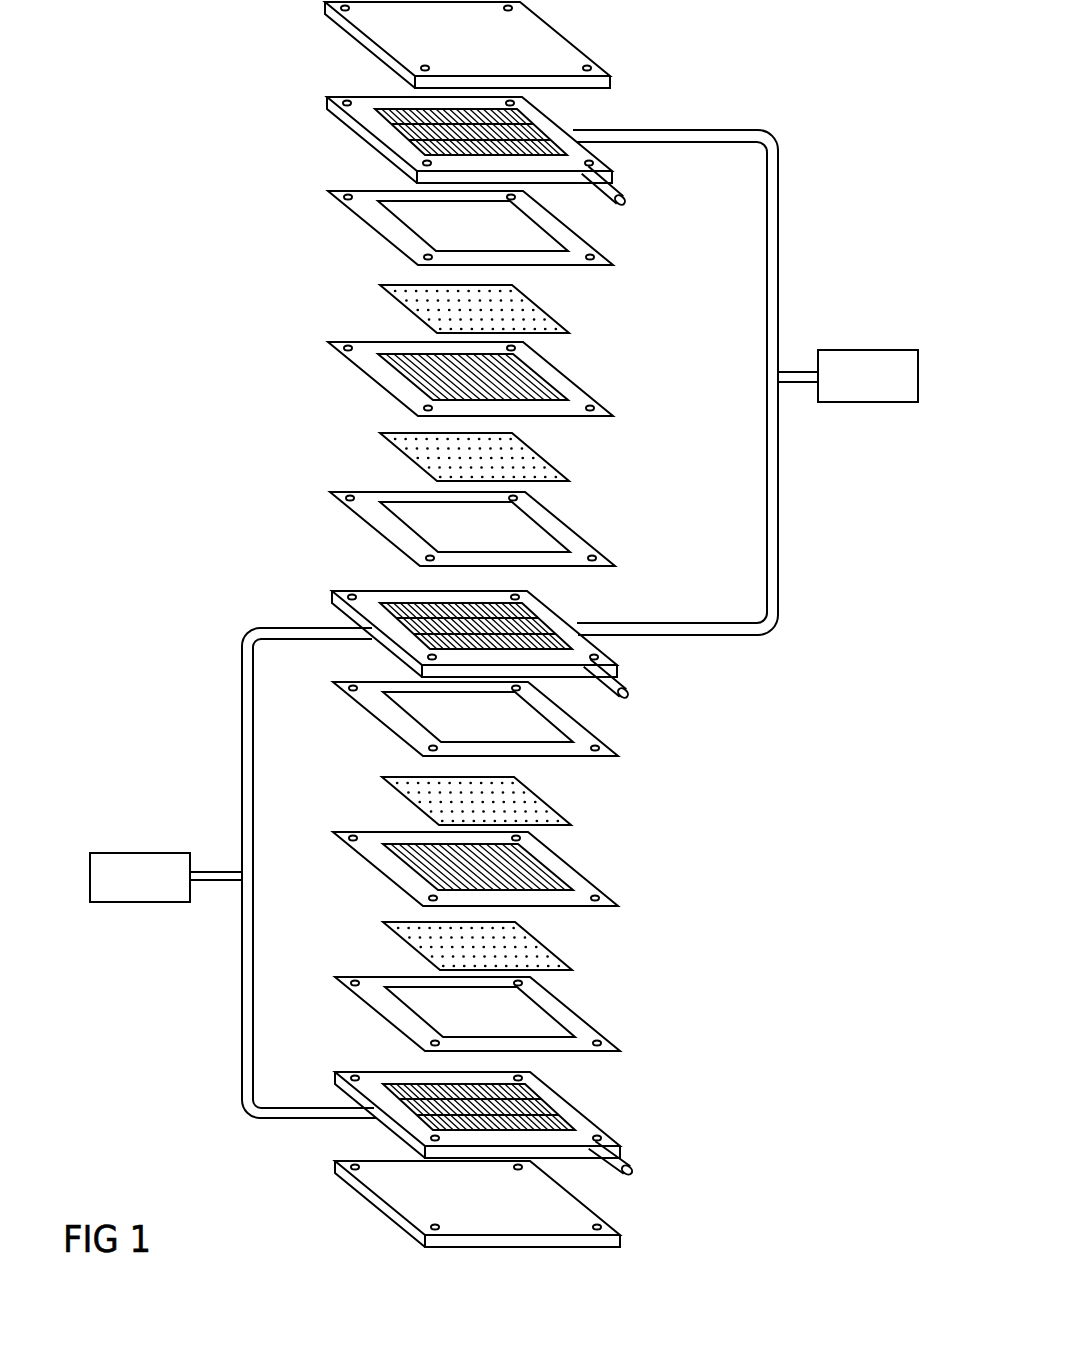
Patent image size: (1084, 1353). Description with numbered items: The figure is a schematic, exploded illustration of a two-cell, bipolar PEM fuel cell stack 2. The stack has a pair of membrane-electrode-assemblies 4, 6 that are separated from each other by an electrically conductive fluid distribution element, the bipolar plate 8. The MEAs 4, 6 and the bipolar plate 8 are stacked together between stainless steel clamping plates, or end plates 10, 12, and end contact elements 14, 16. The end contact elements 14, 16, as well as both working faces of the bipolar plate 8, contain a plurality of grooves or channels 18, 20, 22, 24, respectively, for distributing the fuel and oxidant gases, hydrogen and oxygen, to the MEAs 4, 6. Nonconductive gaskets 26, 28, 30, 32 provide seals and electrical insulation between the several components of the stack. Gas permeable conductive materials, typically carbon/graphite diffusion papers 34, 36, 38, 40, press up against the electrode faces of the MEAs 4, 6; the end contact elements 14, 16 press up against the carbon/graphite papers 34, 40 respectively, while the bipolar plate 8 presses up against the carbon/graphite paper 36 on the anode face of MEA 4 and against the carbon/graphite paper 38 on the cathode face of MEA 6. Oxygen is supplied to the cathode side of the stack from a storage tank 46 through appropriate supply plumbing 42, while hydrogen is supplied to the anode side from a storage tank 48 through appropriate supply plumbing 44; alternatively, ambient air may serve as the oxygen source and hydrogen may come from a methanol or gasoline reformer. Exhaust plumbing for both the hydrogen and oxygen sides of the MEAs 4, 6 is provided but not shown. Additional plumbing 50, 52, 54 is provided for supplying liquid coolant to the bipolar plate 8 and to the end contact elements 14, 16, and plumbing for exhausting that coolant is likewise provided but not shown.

The fuel cell stack 2 is at (808, 117).
The membrane-electrode-assembly 4 is at (355, 376).
The membrane-electrode-assembly 6 is at (596, 875).
The bipolar plate 8 is at (557, 605).
The end plate 10 is at (355, 41).
The end plate 12 is at (604, 1217).
The end contact element 14 is at (350, 129).
The end contact element 16 is at (596, 1117).
The channels 18 is at (540, 130).
The channels 20 is at (395, 603).
The channels 22 is at (573, 682).
The channels 24 is at (520, 1108).
The nonconductive gasket 26 is at (362, 218).
The nonconductive gasket 28 is at (362, 530).
The nonconductive gasket 30 is at (609, 753).
The nonconductive gasket 32 is at (574, 1013).
The carbon/graphite diffusion paper 34 is at (392, 298).
The carbon/graphite diffusion paper 36 is at (382, 450).
The carbon/graphite diffusion paper 38 is at (558, 807).
The carbon/graphite diffusion paper 40 is at (559, 944).
The supply plumbing 42 is at (777, 543).
The supply plumbing 44 is at (245, 672).
The storage tank 46 is at (863, 349).
The storage tank 48 is at (112, 858).
The plumbing 50 is at (614, 190).
The plumbing 52 is at (629, 683).
The plumbing 54 is at (629, 1158).